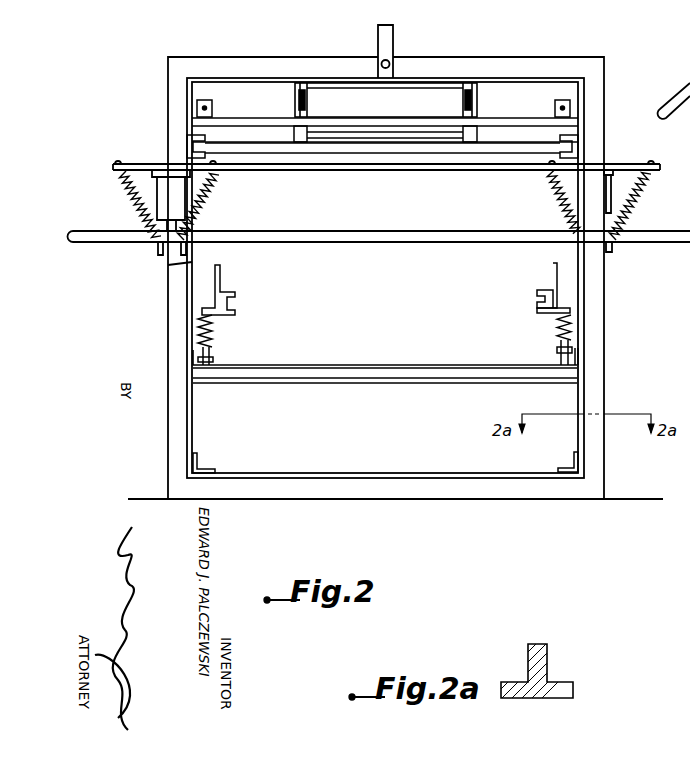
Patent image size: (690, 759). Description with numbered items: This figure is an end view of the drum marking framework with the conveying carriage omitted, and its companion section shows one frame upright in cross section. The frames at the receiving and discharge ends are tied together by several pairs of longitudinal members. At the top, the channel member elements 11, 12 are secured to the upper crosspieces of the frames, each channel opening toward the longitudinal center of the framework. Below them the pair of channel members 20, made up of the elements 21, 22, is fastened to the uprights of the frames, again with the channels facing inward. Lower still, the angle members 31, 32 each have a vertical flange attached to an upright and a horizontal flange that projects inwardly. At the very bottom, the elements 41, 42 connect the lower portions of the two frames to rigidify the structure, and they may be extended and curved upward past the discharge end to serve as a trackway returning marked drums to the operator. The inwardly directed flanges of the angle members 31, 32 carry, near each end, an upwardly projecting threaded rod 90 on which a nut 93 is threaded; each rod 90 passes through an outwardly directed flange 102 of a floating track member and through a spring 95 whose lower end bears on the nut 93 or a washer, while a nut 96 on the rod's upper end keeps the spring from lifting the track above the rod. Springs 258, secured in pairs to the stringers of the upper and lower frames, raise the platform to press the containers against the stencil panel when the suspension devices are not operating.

The channel member element 11 is at (300, 96).
The channel member element 12 is at (476, 100).
The pair of channel members 20 is at (182, 128).
The channel member element 21 is at (190, 142).
The channel member element 22 is at (578, 150).
The springs 258 is at (210, 196).
The nut 96 is at (563, 307).
The outwardly directed flange 102 is at (568, 312).
The spring 95 is at (557, 329).
The nut 93 is at (571, 343).
The threaded rod 90 is at (572, 351).
The angle member 31 is at (205, 368).
The angle member 32 is at (572, 368).
The bottom connecting element 41 is at (198, 471).
The bottom connecting element 42 is at (572, 462).